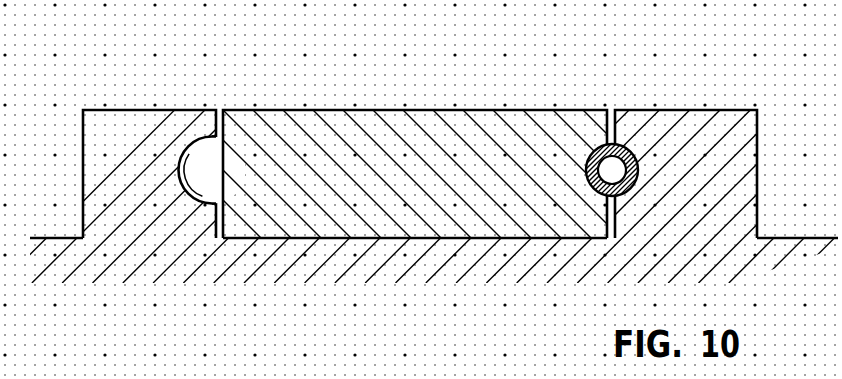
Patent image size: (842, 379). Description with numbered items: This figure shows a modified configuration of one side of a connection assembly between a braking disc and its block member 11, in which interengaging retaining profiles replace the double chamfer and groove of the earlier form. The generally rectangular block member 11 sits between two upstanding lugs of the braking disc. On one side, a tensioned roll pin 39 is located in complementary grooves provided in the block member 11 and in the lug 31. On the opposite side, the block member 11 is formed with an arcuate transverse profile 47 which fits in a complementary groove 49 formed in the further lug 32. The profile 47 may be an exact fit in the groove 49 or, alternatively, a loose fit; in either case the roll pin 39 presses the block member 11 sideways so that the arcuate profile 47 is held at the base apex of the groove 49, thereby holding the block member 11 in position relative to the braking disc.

The block member 11 is at (452, 133).
The lug 31 is at (703, 132).
The further lug 32 is at (158, 132).
The roll pin 39 is at (590, 183).
The arcuate transverse profile 47 is at (198, 168).
The complementary groove 49 is at (210, 204).